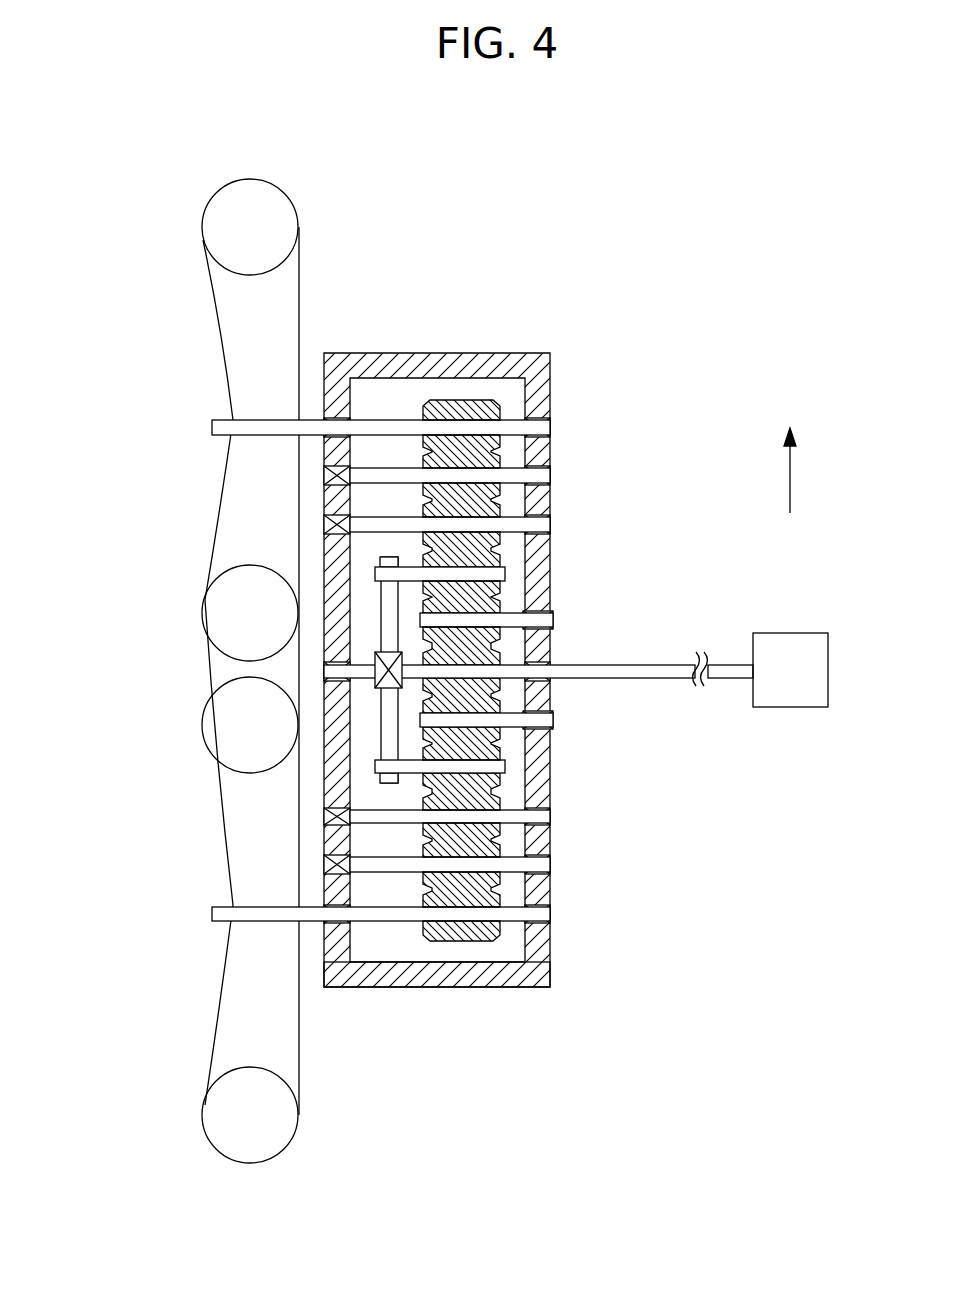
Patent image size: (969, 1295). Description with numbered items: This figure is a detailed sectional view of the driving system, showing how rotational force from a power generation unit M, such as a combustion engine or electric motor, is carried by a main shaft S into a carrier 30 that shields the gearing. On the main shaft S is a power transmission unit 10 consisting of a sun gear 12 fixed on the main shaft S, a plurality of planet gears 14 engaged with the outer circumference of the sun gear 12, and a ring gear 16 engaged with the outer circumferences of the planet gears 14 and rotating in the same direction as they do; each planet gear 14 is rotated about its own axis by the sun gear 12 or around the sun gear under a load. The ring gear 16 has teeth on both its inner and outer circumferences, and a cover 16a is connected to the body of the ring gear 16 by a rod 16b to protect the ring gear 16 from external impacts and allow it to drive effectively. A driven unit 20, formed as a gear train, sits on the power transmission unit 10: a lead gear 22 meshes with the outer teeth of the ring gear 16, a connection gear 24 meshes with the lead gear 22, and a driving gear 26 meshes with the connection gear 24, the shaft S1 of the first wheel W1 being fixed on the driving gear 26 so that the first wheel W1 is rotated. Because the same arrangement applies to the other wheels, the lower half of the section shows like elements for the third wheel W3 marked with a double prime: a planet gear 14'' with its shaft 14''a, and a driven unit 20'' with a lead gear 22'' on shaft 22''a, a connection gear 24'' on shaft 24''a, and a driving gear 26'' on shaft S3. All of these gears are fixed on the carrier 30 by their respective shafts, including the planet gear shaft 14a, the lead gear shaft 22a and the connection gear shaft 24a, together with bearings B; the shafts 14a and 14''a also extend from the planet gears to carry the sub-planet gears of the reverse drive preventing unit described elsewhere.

The first wheel W1 is at (240, 310).
The third wheel W3 is at (240, 797).
The shaft of the wheel S1 is at (212, 431).
The shaft S3 is at (212, 914).
The main shaft S is at (665, 668).
The power generation unit M is at (800, 650).
The bearings B is at (333, 960).
The carrier 30 is at (449, 654).
The power transmission unit 10 is at (544, 629).
The sun gear 12 is at (541, 668).
The planet gears 14 is at (518, 604).
The ring gear 16 is at (505, 562).
The driven unit 20 is at (546, 453).
The lead gear 22 is at (519, 500).
The connection gear 24 is at (519, 451).
The driving gear 26 is at (519, 404).
The driven unit 20'' is at (577, 891).
The lead gear 22'' is at (546, 841).
The connection gear 24'' is at (544, 890).
The driving gear 26'' is at (544, 940).
The planet gear 14'' is at (545, 739).
The shaft 14a is at (420, 622).
The shaft 14''a is at (260, 729).
The cover 16a is at (380, 770).
The rod 16b is at (375, 570).
The shaft 22a is at (392, 522).
The shaft 24a is at (366, 470).
The shaft 22''a is at (334, 833).
The shaft 24''a is at (340, 874).